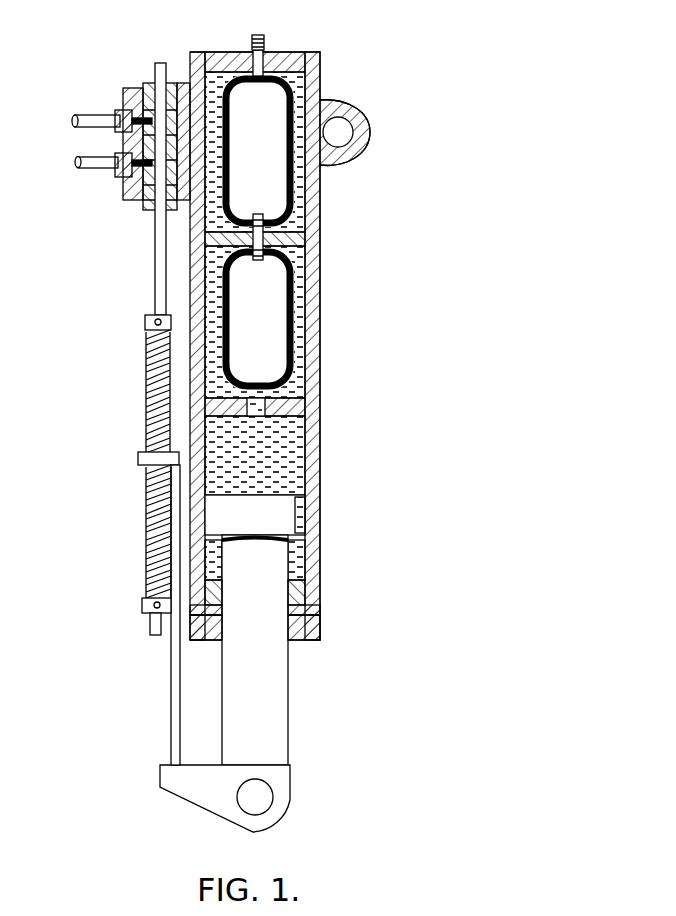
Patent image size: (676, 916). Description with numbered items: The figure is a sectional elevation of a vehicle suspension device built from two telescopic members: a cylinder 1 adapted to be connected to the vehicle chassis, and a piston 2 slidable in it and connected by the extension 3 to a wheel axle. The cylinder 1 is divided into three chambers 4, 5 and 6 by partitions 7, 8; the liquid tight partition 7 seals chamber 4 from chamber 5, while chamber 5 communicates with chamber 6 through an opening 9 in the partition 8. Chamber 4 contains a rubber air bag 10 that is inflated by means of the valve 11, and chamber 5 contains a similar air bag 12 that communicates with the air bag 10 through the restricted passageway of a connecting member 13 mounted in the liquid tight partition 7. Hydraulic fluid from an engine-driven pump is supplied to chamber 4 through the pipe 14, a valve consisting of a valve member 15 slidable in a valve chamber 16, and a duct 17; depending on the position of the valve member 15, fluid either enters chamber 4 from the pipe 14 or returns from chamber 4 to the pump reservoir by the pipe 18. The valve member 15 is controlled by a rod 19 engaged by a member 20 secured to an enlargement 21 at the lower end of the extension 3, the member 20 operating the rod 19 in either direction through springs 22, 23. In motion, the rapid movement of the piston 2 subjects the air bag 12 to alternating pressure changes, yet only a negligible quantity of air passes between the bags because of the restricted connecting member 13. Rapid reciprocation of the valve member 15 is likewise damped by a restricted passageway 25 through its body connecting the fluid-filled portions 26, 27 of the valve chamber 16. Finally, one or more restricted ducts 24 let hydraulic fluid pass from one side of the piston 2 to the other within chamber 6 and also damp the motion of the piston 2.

The cylinder 1 is at (334, 350).
The piston 2 is at (267, 505).
The extension 3 is at (258, 683).
The chamber 4 is at (295, 80).
The chamber 5 is at (297, 251).
The chamber 6 is at (277, 463).
The liquid tight partition 7 is at (295, 232).
The partition 8 is at (300, 395).
The opening 9 is at (257, 412).
The air bag 10 is at (297, 195).
The valve 11 is at (262, 37).
The air bag 12 is at (295, 314).
The connecting member 13 is at (252, 260).
The pipe 14 is at (105, 117).
The valve member 15 is at (143, 177).
The valve chamber 16 is at (140, 137).
The duct 17 is at (190, 137).
The pipe 18 is at (93, 163).
The rod 19 is at (157, 290).
The member 20 is at (175, 490).
The enlargement 21 is at (205, 787).
The spring 22 is at (150, 368).
The spring 23 is at (150, 548).
The restricted duct 24 is at (300, 520).
The restricted passageway 25 is at (142, 112).
The portion of valve chamber 26 is at (177, 97).
The portion of valve chamber 27 is at (142, 173).